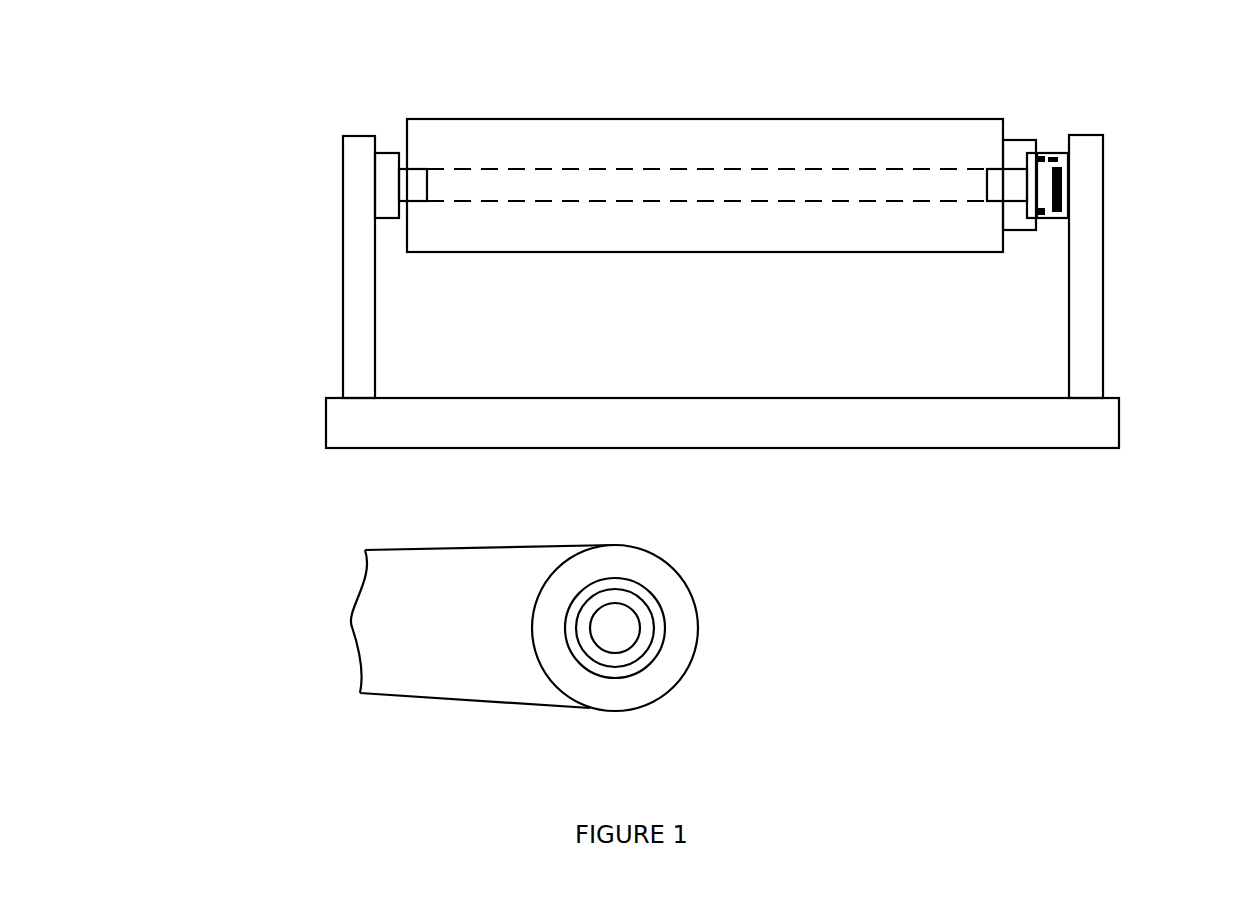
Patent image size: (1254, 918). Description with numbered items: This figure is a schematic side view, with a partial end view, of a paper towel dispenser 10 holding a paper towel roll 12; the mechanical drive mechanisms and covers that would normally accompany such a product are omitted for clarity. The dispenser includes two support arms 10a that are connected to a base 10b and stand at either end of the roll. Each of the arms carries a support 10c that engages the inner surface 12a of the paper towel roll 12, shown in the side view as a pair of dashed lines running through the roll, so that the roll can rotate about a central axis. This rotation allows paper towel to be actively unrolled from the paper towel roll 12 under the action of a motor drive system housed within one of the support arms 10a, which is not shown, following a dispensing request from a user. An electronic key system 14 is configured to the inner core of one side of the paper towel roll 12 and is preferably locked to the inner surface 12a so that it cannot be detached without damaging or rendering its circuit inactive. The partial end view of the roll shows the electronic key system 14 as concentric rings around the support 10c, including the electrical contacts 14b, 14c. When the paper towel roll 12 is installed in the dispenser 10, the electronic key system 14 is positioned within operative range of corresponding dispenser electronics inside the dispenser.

The paper towel dispenser 10 is at (719, 390).
The support arms 10a is at (342, 288).
The base 10b is at (952, 430).
The supports 10c is at (420, 165).
The paper towel roll 12 is at (705, 142).
The inner surface 12a is at (505, 169).
The electronic key system 14 is at (823, 390).
The electrical contact 14b is at (578, 623).
The electrical contact 14c is at (665, 630).